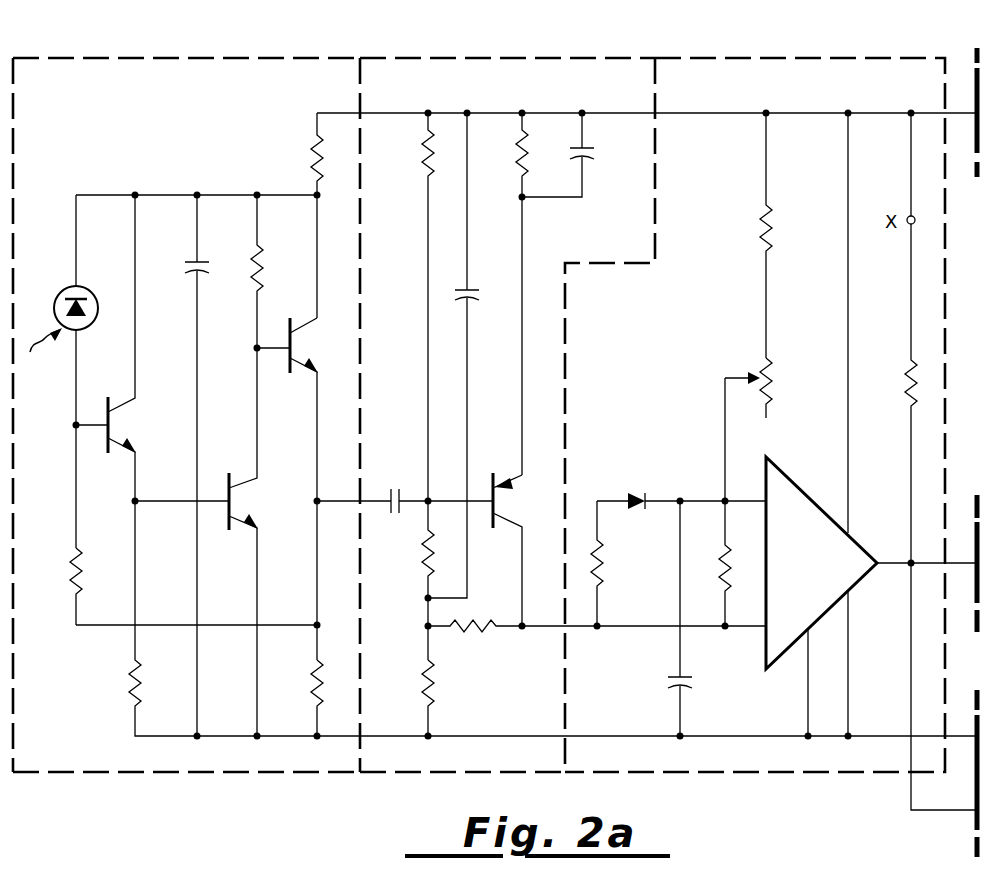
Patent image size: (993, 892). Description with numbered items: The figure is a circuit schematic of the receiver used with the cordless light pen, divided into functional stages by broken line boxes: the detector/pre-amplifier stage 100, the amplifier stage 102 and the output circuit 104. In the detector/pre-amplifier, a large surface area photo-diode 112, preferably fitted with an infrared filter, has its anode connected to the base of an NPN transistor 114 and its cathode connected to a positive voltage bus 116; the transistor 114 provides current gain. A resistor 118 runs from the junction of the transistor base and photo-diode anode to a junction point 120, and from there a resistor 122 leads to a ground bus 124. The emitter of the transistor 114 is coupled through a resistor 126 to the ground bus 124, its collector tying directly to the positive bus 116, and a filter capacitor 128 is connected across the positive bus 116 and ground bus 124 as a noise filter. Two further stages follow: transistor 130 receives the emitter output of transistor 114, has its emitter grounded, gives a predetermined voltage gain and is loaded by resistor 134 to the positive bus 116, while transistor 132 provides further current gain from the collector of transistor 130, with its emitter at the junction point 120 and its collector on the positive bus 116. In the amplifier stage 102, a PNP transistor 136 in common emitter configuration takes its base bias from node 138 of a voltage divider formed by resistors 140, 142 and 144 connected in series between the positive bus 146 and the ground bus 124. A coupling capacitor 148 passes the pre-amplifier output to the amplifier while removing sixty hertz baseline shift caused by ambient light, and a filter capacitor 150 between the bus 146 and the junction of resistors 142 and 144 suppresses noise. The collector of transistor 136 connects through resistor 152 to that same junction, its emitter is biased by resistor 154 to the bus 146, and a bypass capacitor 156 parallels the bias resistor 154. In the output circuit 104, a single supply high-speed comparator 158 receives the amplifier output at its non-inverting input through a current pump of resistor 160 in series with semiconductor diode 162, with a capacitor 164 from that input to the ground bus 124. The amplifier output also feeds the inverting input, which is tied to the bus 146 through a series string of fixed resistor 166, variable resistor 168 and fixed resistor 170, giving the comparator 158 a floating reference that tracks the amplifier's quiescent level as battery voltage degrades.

The detector/pre-amplifier stage 100 is at (158, 58).
The amplifier stage 102 is at (492, 58).
The output circuit 104 is at (805, 58).
The photo-diode 112 is at (63, 292).
The NPN transistor 114 is at (137, 418).
The positive voltage bus 116 is at (105, 195).
The resistor 118 is at (72, 578).
The junction point 120 is at (315, 624).
The resistor 122 is at (312, 668).
The ground bus 124 is at (228, 736).
The resistor 126 is at (130, 668).
The filter capacitor 128 is at (230, 248).
The transistor 130 is at (245, 495).
The transistor 132 is at (305, 340).
The resistor 134 is at (262, 270).
The PNP transistor 136 is at (505, 498).
The node 138 is at (428, 504).
The resistor 140 is at (425, 148).
The resistor 142 is at (425, 556).
The resistor 144 is at (432, 690).
The positive bus 146 is at (715, 113).
The coupling capacitor 148 is at (395, 488).
The filter capacitor 150 is at (480, 295).
The resistor 152 is at (472, 628).
The bias resistor 154 is at (520, 148).
The bypass capacitor 156 is at (592, 155).
The comparator 158 is at (805, 490).
The resistor 160 is at (607, 576).
The semiconductor diode 162 is at (635, 496).
The capacitor 164 is at (672, 679).
The fixed resistor 166 is at (775, 232).
The variable resistor 168 is at (773, 385).
The fixed resistor 170 is at (716, 556).